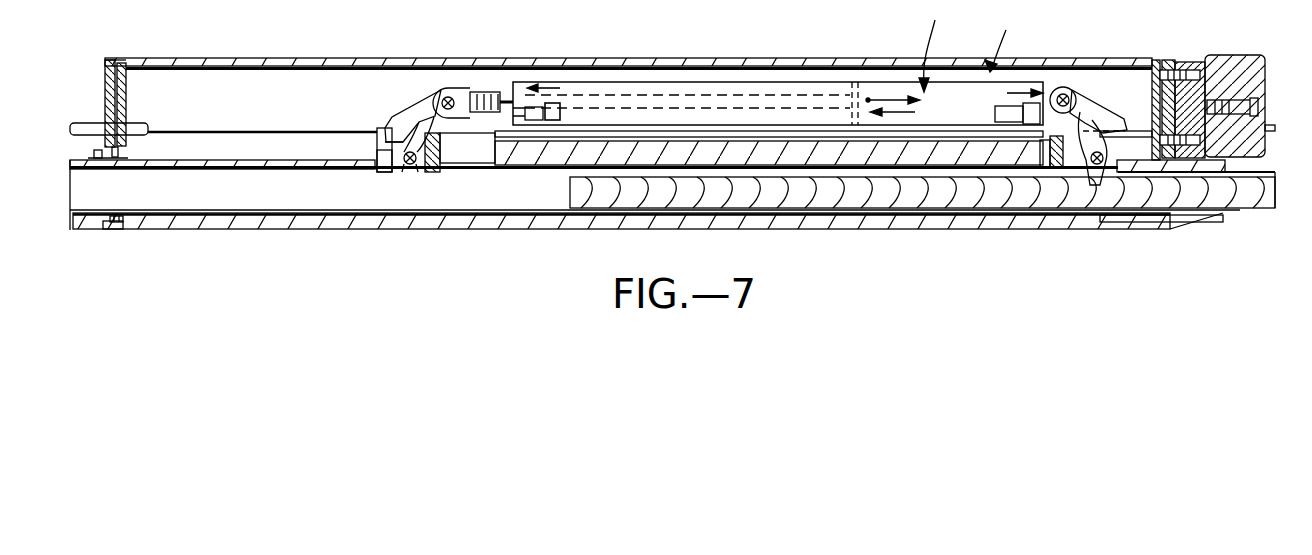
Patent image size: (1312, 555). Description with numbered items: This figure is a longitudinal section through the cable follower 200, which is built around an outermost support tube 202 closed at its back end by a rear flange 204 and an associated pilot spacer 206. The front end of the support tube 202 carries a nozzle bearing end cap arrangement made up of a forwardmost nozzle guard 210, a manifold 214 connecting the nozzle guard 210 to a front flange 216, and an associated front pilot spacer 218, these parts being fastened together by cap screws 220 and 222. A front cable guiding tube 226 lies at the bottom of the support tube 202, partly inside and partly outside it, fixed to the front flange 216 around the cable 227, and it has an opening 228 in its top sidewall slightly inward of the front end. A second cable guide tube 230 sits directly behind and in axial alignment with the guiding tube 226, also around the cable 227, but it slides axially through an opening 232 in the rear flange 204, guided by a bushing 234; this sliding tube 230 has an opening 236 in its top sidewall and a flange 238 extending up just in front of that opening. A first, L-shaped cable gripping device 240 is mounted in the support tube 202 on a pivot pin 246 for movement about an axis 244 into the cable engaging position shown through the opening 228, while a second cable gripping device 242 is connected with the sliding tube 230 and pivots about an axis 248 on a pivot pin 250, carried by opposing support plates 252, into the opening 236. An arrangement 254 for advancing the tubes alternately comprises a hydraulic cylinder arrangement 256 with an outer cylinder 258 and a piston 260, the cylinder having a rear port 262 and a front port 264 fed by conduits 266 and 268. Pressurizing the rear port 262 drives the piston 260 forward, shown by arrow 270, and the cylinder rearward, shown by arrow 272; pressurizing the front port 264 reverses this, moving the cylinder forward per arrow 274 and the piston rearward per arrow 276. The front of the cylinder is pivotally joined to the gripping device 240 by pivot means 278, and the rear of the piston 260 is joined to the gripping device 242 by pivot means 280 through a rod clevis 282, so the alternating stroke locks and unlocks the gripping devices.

The cable follower 200 is at (298, 287).
The support tube 202 is at (342, 62).
The rear flange 204 is at (108, 60).
The pilot spacer 206 is at (127, 80).
The nozzle guard 210 is at (1265, 36).
The manifold 214 is at (1180, 60).
The front flange 216 is at (1157, 60).
The front pilot spacer 218 is at (1148, 78).
The cap screw 220 is at (1240, 172).
The cap screw 222 is at (1190, 62).
The front cable guiding tube 226 is at (1187, 227).
The cable 227 is at (582, 203).
The opening 228 is at (1130, 131).
The second cable guide tube 230 is at (85, 218).
The opening 232 is at (110, 230).
The guide bushing 234 is at (118, 226).
The opening 236 is at (377, 180).
The flange 238 is at (428, 177).
The first cable gripping device 240 is at (1083, 108).
The second cable gripping device 242 is at (421, 110).
The axis 244 is at (1095, 178).
The pivot pin 246 is at (1070, 175).
The axis 248 is at (407, 167).
The pivot pin 250 is at (413, 167).
The support plates 252 is at (377, 137).
The arrangement 254 is at (1012, 41).
The hydraulic cylinder arrangement 256 is at (939, 46).
The outer cylinder 258 is at (940, 87).
The piston 260 is at (508, 98).
The rear port 262 is at (560, 105).
The front port 264 is at (1035, 125).
The conduit 266 is at (530, 124).
The conduit 268 is at (997, 116).
The arrow 270 is at (885, 98).
The arrow 272 is at (548, 86).
The arrow 274 is at (1016, 92).
The arrow 276 is at (890, 113).
The pivot means 278 is at (1063, 88).
The pivot means 280 is at (442, 90).
The rod clevis 282 is at (467, 90).